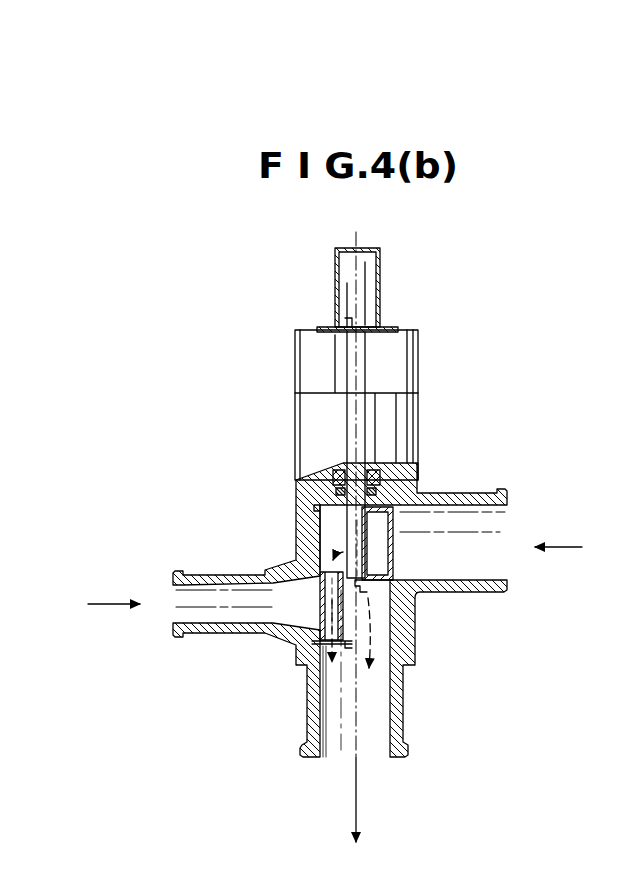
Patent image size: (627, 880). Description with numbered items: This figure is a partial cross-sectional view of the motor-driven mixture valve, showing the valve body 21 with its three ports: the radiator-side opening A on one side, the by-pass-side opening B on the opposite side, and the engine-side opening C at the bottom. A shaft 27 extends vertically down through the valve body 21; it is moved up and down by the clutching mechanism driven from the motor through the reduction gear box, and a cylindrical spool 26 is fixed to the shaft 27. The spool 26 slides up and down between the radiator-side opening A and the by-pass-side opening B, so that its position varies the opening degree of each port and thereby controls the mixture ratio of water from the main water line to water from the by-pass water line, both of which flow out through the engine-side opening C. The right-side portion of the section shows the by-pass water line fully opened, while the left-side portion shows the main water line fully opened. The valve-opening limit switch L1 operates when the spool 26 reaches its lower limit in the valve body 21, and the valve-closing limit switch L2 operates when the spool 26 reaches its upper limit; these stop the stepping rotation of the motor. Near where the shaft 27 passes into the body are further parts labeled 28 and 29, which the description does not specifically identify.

The valve body 21 is at (300, 418).
The spool 26 is at (392, 547).
The shaft 27 is at (345, 468).
The packing 28 is at (386, 469).
The seal ring 29 is at (385, 491).
The valve-opening limit switch L1 is at (308, 646).
The valve-closing limit switch L2 is at (313, 508).
The radiator-side opening A is at (534, 578).
The by-pass-side opening B is at (162, 631).
The engine-side opening C is at (376, 801).